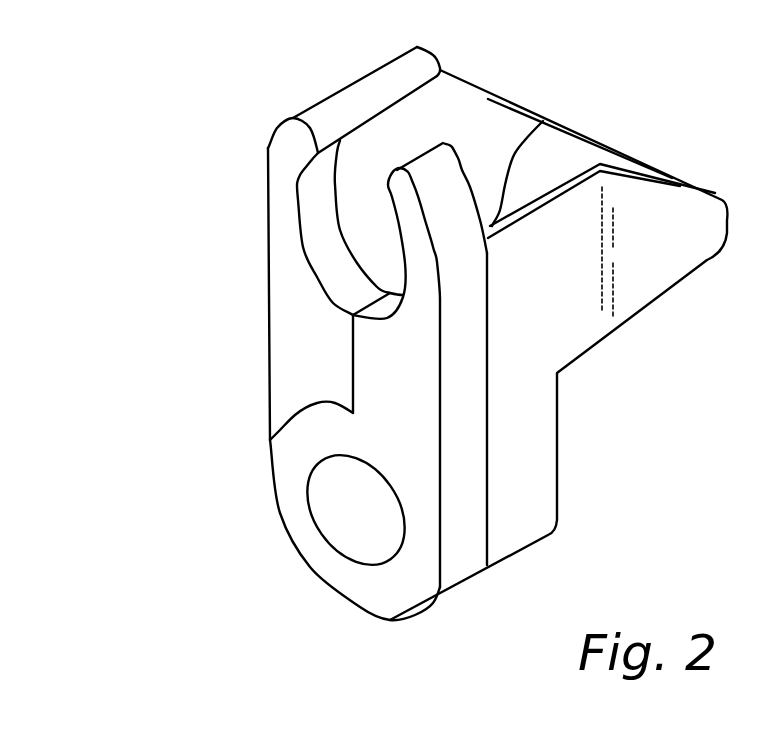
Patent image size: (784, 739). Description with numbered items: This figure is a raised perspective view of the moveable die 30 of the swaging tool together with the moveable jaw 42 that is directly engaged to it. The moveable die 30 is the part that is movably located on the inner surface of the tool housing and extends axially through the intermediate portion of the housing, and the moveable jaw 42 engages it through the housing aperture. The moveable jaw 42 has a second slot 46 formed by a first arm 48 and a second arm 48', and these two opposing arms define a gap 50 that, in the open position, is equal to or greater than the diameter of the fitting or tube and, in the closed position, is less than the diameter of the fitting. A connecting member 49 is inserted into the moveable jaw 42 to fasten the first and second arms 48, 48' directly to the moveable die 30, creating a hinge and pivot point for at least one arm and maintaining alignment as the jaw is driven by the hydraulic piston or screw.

The moveable die 30 is at (531, 455).
The moveable jaw 42 is at (293, 307).
The second slot 46 is at (368, 222).
The first arm 48 is at (232, 216).
The second arm 48' is at (551, 196).
The connecting member 49 is at (344, 515).
The gap 50 is at (393, 130).